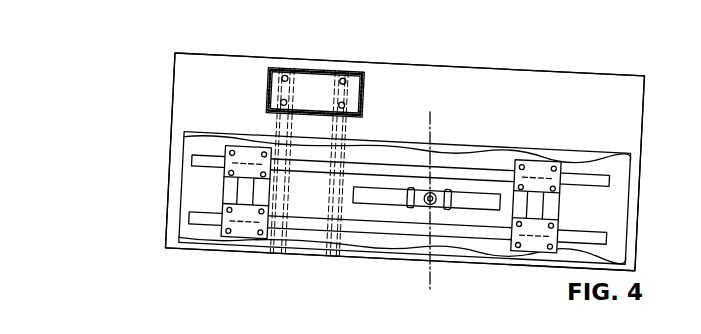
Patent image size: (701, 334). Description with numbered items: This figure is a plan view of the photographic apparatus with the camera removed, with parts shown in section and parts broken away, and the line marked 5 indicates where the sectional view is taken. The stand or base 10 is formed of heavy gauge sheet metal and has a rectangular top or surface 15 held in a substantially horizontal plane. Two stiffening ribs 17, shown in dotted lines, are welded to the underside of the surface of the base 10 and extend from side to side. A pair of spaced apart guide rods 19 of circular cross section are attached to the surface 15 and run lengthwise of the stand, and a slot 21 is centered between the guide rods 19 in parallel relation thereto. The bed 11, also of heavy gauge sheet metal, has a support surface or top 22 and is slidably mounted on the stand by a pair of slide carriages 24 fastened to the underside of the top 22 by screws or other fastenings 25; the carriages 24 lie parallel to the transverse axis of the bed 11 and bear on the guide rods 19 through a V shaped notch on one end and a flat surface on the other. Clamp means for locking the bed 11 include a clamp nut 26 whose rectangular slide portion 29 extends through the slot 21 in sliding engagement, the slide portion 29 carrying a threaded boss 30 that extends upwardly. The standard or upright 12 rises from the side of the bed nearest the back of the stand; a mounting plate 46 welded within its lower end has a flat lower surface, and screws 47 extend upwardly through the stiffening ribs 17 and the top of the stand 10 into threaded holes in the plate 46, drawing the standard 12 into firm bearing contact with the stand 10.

The stand or base 10 is at (598, 72).
The rectangular top or surface 15 is at (510, 82).
The support surface or top 22 is at (604, 156).
The bed 11 is at (556, 152).
The guide rods 19 is at (462, 167).
The slide carriages 24 is at (224, 187).
The screws or other fastenings 25 is at (232, 151).
The clamp nut 26 is at (412, 205).
The slot 21 is at (498, 193).
The slide portion 29 is at (444, 204).
The threaded boss 30 is at (428, 193).
The standard or upright 12 is at (268, 83).
The mounting plate 46 is at (315, 82).
The screws 47 is at (287, 72).
The stiffening ribs 17 is at (338, 245).
The section line 5- 5 is at (416, 122).